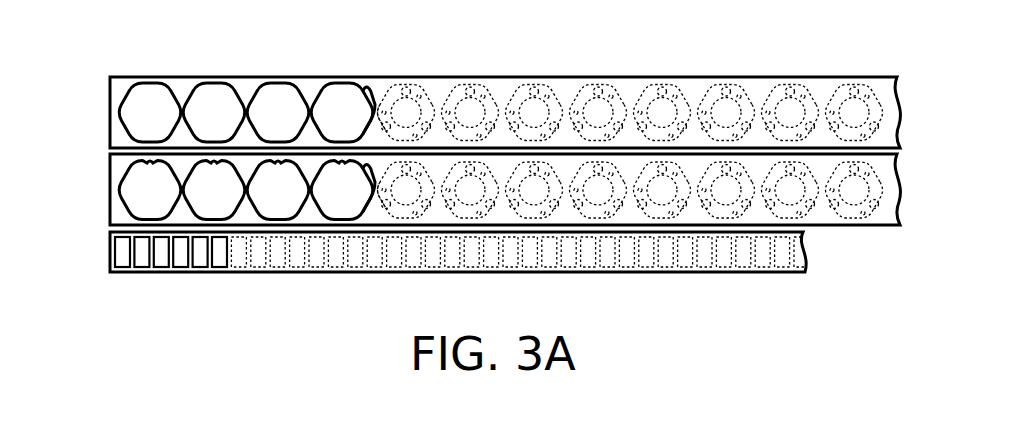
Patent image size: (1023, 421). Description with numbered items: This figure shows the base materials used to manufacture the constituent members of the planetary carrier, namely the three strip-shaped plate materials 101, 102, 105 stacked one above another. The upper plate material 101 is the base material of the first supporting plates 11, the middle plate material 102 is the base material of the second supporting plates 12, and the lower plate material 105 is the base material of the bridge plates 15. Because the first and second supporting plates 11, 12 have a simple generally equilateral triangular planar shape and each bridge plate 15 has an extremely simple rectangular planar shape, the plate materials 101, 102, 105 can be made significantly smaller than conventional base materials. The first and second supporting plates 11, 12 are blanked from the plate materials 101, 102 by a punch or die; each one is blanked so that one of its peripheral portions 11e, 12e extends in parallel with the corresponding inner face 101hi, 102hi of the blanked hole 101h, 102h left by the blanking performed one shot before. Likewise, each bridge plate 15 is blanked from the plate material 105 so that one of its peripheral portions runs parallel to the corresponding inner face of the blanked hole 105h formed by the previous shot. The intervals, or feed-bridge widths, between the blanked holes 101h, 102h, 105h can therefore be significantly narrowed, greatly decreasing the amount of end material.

The plate material 101 is at (110, 105).
The blanked hole 101h is at (347, 100).
The inner face 101hi is at (372, 113).
The first supporting plate 11 is at (425, 95).
The peripheral portion 11e is at (380, 110).
The plate material 102 is at (110, 182).
The blanked hole 102h is at (348, 190).
The inner face 102hi is at (370, 195).
The second supporting plate 12 is at (432, 216).
The peripheral portion 12e is at (380, 190).
The plate material 105 is at (110, 246).
The blanked hole 105h is at (222, 249).
The bridge plate 15 is at (784, 250).